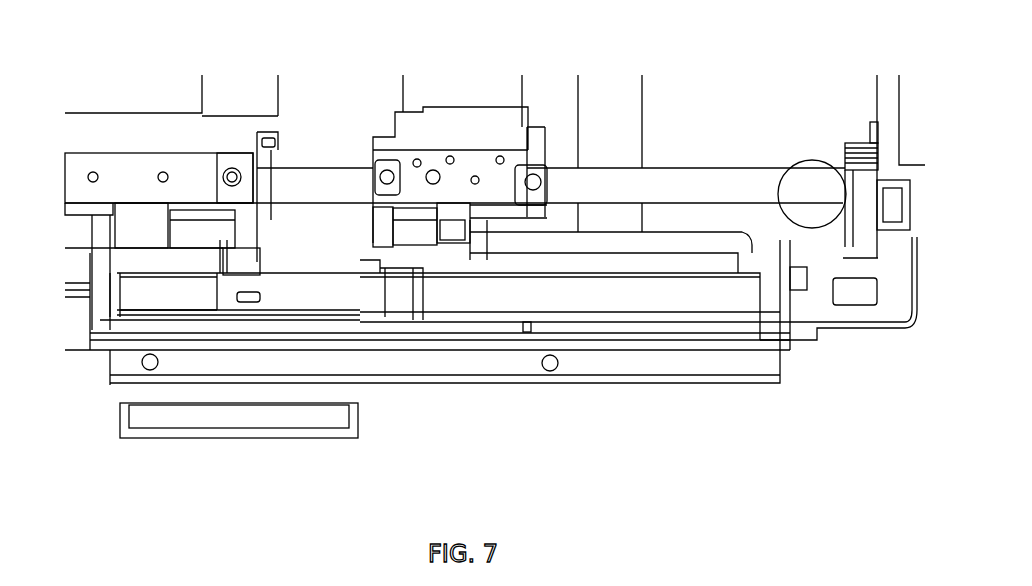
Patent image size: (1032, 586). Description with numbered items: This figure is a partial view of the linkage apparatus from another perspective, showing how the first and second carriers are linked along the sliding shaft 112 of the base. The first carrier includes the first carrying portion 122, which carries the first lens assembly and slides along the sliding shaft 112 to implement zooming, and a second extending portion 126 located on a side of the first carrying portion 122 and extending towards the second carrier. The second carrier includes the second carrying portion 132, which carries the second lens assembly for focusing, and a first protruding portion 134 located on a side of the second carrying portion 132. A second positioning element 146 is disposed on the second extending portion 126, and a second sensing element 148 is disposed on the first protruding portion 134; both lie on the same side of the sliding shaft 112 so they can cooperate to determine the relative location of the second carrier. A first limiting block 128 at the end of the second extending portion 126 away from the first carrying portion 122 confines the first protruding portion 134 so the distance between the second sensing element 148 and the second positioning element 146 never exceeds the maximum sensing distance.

The sliding shaft 112 is at (693, 175).
The first carrying portion 122 is at (143, 148).
The second extending portion 126 is at (150, 295).
The first limiting block 128 is at (400, 272).
The second carrying portion 132 is at (467, 127).
The first protruding portion 134 is at (258, 262).
The second positioning element 146 is at (250, 417).
The second sensing element 148 is at (260, 273).